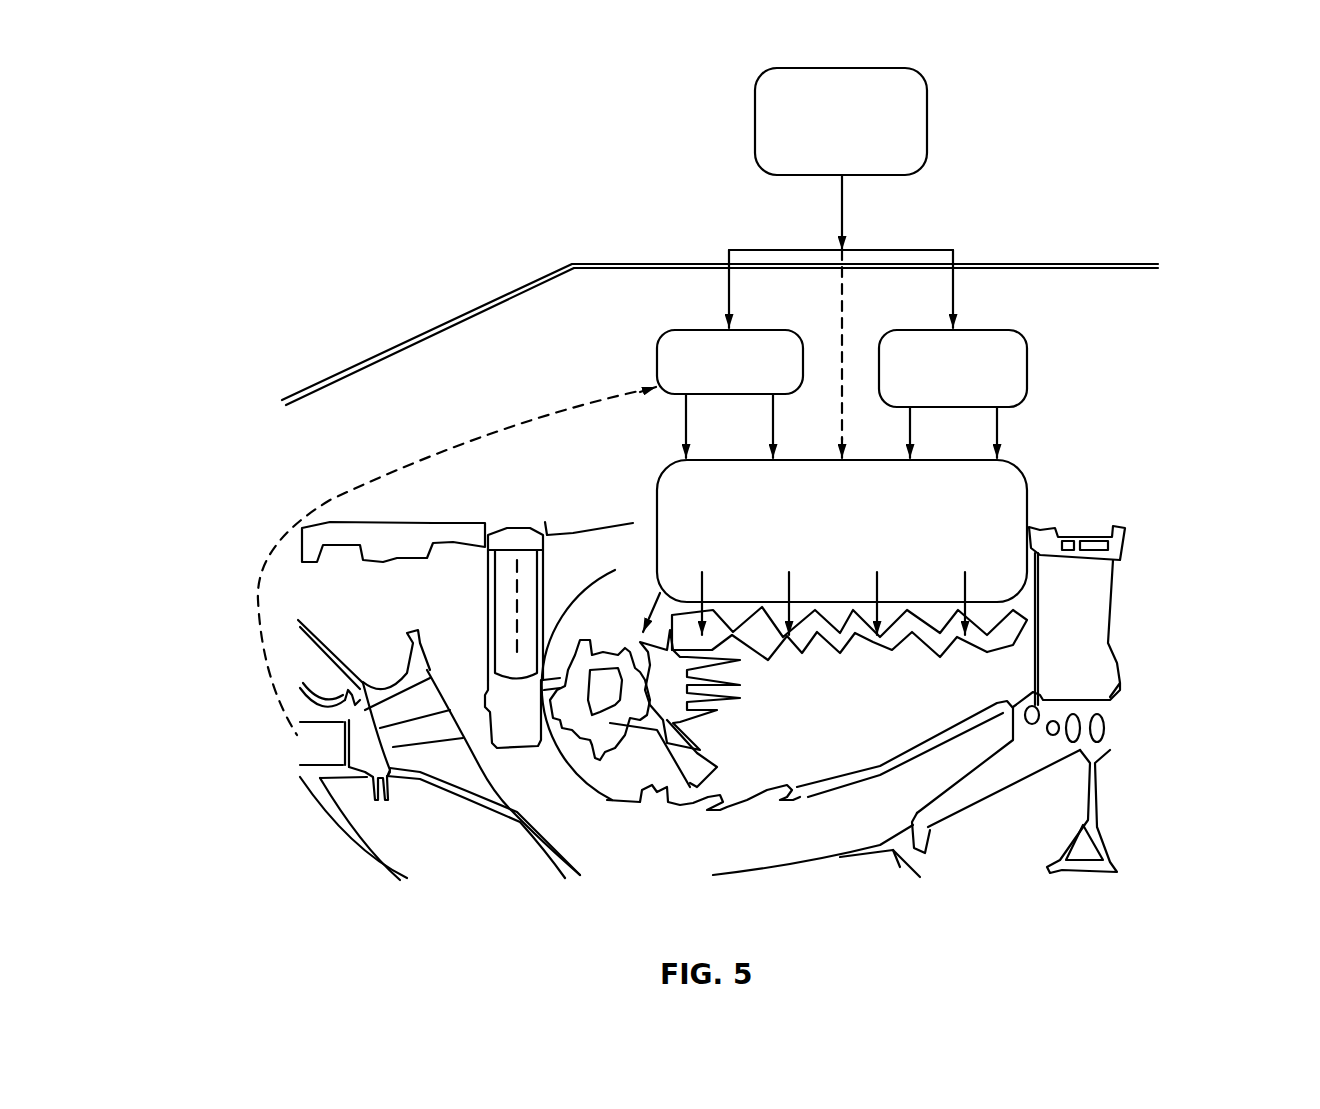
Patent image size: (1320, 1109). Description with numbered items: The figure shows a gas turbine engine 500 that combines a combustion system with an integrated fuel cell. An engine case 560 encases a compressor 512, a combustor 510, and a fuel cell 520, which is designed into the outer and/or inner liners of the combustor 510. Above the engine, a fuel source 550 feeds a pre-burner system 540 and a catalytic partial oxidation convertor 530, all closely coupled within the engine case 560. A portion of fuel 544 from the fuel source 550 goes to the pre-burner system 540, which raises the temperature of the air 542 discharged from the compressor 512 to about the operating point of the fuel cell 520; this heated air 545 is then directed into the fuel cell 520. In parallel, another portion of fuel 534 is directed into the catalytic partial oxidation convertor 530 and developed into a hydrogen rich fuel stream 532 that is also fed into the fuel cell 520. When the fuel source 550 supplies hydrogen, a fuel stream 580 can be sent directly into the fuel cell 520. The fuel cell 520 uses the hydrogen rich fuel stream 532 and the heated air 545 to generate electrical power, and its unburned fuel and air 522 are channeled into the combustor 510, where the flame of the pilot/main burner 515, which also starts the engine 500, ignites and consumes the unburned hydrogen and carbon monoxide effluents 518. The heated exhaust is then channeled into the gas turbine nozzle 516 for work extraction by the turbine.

The gas turbine engine 500 is at (392, 273).
The combustor 510 is at (818, 795).
The compressor 512 is at (337, 742).
The pilot/main burner 515 is at (700, 745).
The gas turbine nozzle 516 is at (1122, 720).
The unburned hydrogen and carbon monoxide effluents 518 is at (1018, 657).
The fuel cell 520 is at (1005, 502).
The unburned fuel and air 522 is at (1017, 610).
The catalytic partial oxidation convertor 530 is at (1040, 362).
The hydrogen rich fuel stream 532 is at (1018, 433).
The portion of fuel 534 is at (997, 298).
The pre-burner system 540 is at (657, 362).
The air 542 is at (555, 407).
The portion of fuel 544 is at (680, 305).
The heated air 545 is at (663, 437).
The fuel source 550 is at (932, 124).
The engine case 560 is at (1137, 262).
The fuel stream 580 is at (840, 317).